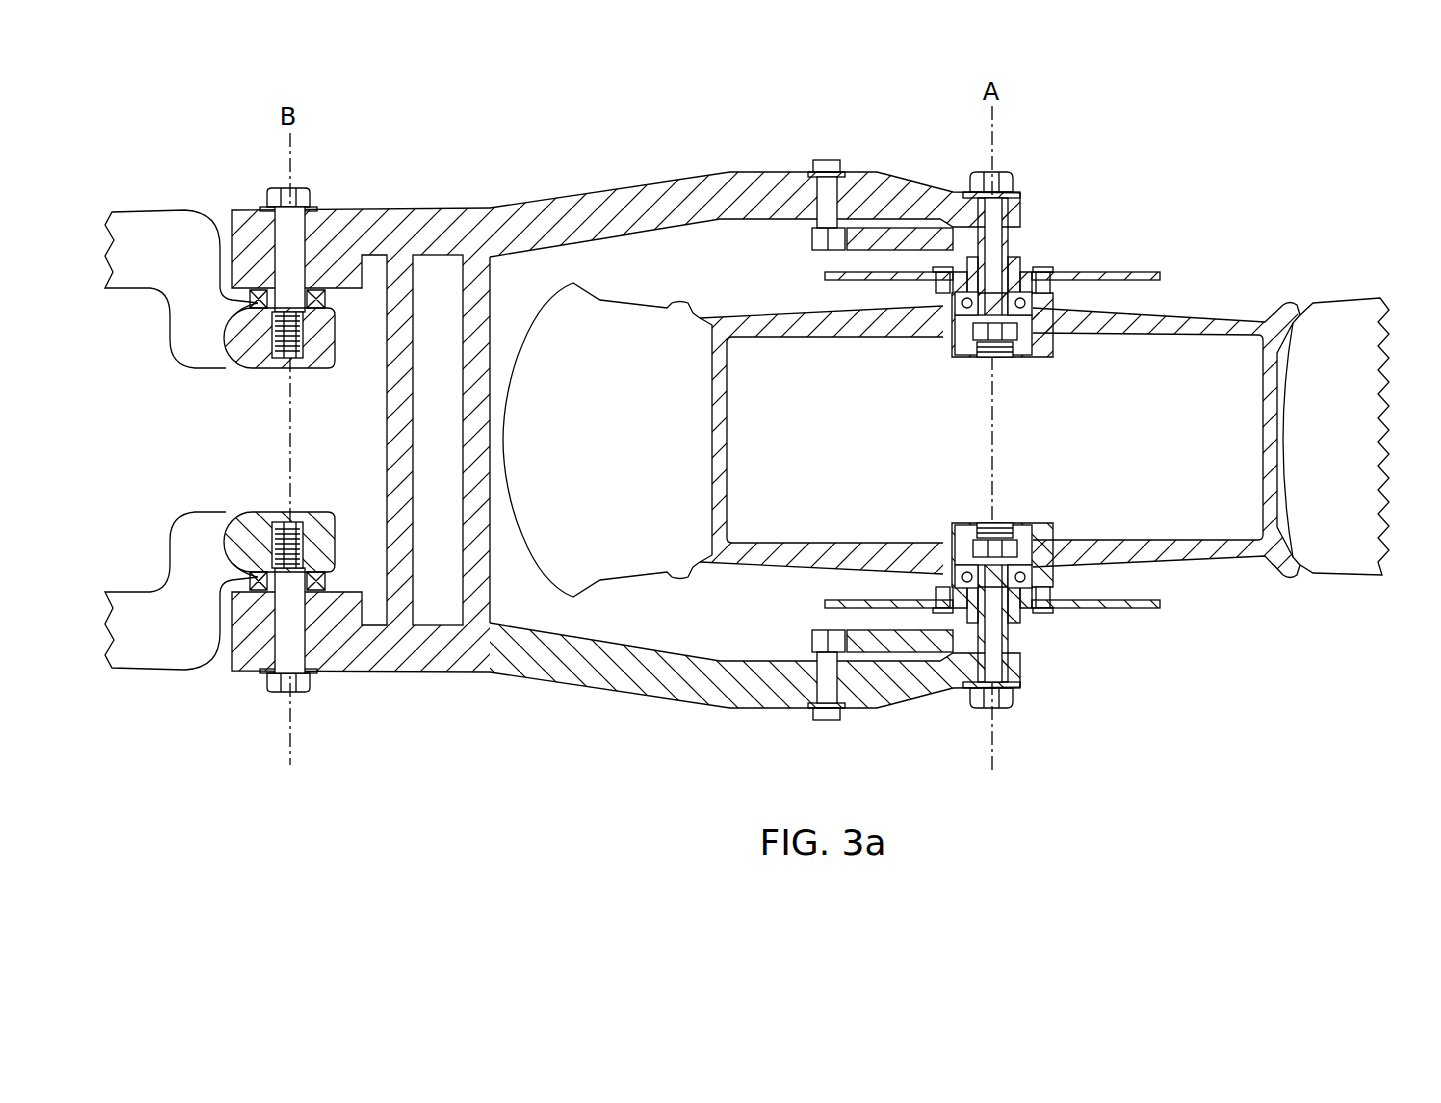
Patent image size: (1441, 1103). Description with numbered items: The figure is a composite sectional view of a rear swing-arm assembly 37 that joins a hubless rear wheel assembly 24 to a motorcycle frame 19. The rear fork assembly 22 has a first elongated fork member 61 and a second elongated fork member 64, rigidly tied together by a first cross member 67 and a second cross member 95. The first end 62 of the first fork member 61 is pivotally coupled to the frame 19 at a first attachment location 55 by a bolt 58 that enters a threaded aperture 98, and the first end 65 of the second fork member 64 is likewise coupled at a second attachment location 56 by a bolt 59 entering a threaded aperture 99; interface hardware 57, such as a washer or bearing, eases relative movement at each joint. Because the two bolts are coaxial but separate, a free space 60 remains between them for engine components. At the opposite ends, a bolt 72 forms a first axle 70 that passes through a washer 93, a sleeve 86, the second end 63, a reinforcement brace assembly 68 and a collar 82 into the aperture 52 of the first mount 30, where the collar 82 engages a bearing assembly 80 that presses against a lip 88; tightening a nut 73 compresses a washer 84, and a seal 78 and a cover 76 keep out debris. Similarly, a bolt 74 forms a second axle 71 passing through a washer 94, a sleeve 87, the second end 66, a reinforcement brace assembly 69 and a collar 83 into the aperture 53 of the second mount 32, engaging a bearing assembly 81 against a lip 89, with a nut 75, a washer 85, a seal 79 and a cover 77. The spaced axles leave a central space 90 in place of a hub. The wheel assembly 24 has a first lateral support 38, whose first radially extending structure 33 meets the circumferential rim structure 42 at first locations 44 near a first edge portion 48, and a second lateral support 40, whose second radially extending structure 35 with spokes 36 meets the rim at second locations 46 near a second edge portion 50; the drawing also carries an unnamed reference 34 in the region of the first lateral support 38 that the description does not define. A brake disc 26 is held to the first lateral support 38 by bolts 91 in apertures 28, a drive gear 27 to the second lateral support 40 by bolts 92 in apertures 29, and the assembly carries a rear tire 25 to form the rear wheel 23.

The motorcycle frame 19 is at (131, 645).
The rear fork assembly 22 is at (558, 740).
The rear wheel 23 is at (1368, 734).
The rear wheel assembly 24 is at (1246, 714).
The rear tire 25 is at (596, 481).
The brake disc 26 is at (1135, 608).
The drive gear 27 is at (1135, 272).
The apertures 28 is at (930, 592).
The apertures 29 is at (930, 288).
The first mount 30 is at (1082, 622).
The second mount 32 is at (1082, 255).
The first radially extending structure 33 is at (800, 577).
The lower duct segment 34 is at (835, 543).
The second radially extending structure 35 is at (800, 303).
The spokes 36 is at (835, 337).
The rear swing-arm assembly 37 is at (422, 790).
The first lateral support 38 is at (1068, 705).
The second lateral support 40 is at (1070, 170).
The circumferential rim structure 42 is at (729, 476).
The first locations 44 is at (738, 536).
The second locations 46 is at (738, 344).
The first edge portion 48 is at (700, 577).
The second edge portion 50 is at (700, 303).
The aperture 52 is at (1032, 583).
The aperture 53 is at (1032, 300).
The first attachment location 55 is at (253, 537).
The second attachment location 56 is at (253, 343).
The interface hardware 57 is at (236, 366).
The bolt 58 is at (300, 692).
The bolt 59 is at (298, 188).
The free space 60 is at (240, 452).
The first elongated fork member 61 is at (619, 682).
The first end 62 is at (230, 680).
The second end 63 is at (946, 725).
The second elongated fork member 64 is at (616, 226).
The first end 65 is at (226, 207).
The second end 66 is at (946, 157).
The first cross member 67 is at (493, 308).
The reinforcement brace assembly 68 is at (900, 657).
The reinforcement brace assembly 69 is at (898, 222).
The first axle 70 is at (1012, 650).
The second axle 71 is at (1015, 245).
The bolt 72 is at (987, 710).
The nut 73 is at (988, 522).
The bolt 74 is at (985, 172).
The nut 75 is at (987, 357).
The cover 76 is at (1005, 522).
The cover 77 is at (1005, 357).
The seal 78 is at (963, 603).
The seal 79 is at (962, 275).
The bearing assembly 80 is at (965, 578).
The bearing assembly 81 is at (965, 302).
The collar 82 is at (1005, 630).
The collar 83 is at (1005, 248).
The washer 84 is at (978, 553).
The washer 85 is at (980, 332).
The sleeve 86 is at (998, 645).
The sleeve 87 is at (997, 231).
The lip 88 is at (1018, 545).
The lip 89 is at (1018, 332).
The space 90 is at (998, 450).
The bolts 91 is at (935, 611).
The bolts 92 is at (935, 269).
The washer 93 is at (998, 712).
The washer 94 is at (1012, 185).
The second cross member 95 is at (392, 390).
The threaded aperture 98 is at (320, 556).
The threaded aperture 99 is at (320, 322).